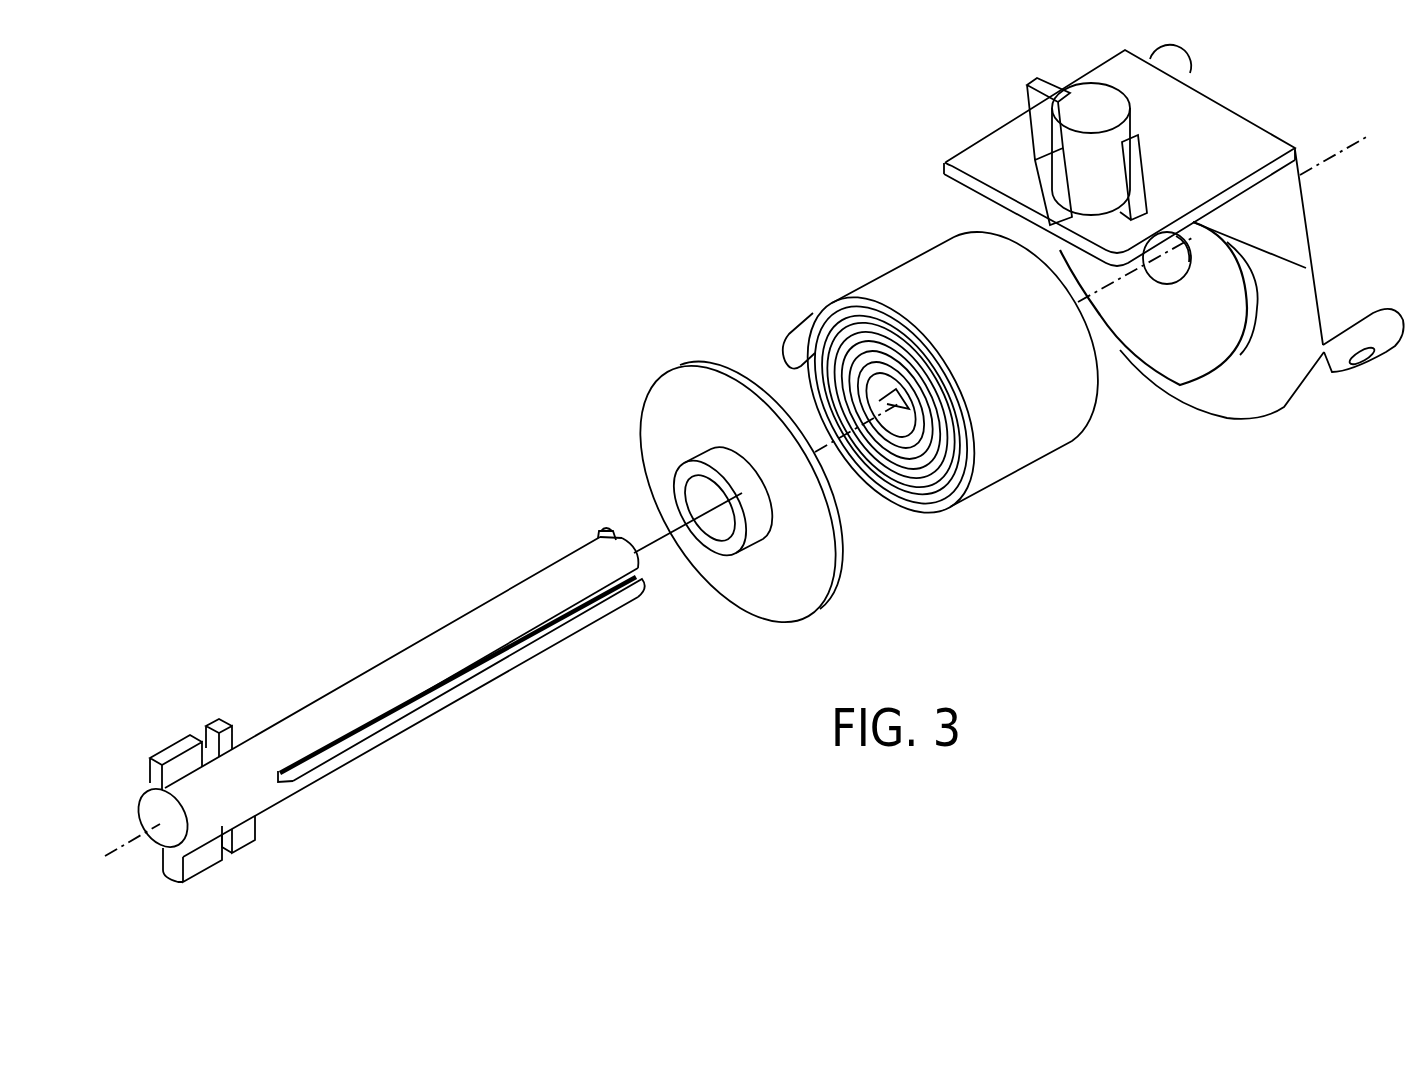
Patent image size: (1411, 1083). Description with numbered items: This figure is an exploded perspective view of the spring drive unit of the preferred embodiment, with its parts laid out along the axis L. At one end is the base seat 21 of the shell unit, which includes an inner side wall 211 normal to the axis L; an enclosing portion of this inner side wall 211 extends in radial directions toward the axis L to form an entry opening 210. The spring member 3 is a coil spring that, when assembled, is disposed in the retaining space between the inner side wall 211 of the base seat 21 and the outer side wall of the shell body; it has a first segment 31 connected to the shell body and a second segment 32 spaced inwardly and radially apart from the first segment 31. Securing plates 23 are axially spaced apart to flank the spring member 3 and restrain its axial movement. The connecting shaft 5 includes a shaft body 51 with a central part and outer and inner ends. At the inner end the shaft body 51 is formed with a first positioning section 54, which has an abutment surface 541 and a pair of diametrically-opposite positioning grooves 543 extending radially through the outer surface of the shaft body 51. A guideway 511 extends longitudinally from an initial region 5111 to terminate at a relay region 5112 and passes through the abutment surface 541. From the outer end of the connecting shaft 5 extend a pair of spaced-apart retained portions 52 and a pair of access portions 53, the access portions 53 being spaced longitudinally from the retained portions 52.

The base seat 21 is at (1240, 88).
The inner side wall 211 is at (1323, 283).
The entry opening 210 is at (1183, 262).
The securing plates 23 is at (1178, 357).
The spring member 3 is at (903, 272).
The first segment 31 is at (792, 345).
The second segment 32 is at (900, 412).
The connecting shaft 5 is at (318, 672).
The shaft body 51 is at (390, 670).
The guideway 511 is at (447, 683).
The initial region 5111 is at (370, 730).
The relay region 5112 is at (605, 597).
The retained portions 52 is at (228, 733).
The access portions 53 is at (185, 757).
The first positioning section 54 is at (570, 527).
The abutment surface 541 is at (630, 537).
The positioning grooves 543 is at (603, 540).
The axis L is at (741, 496).